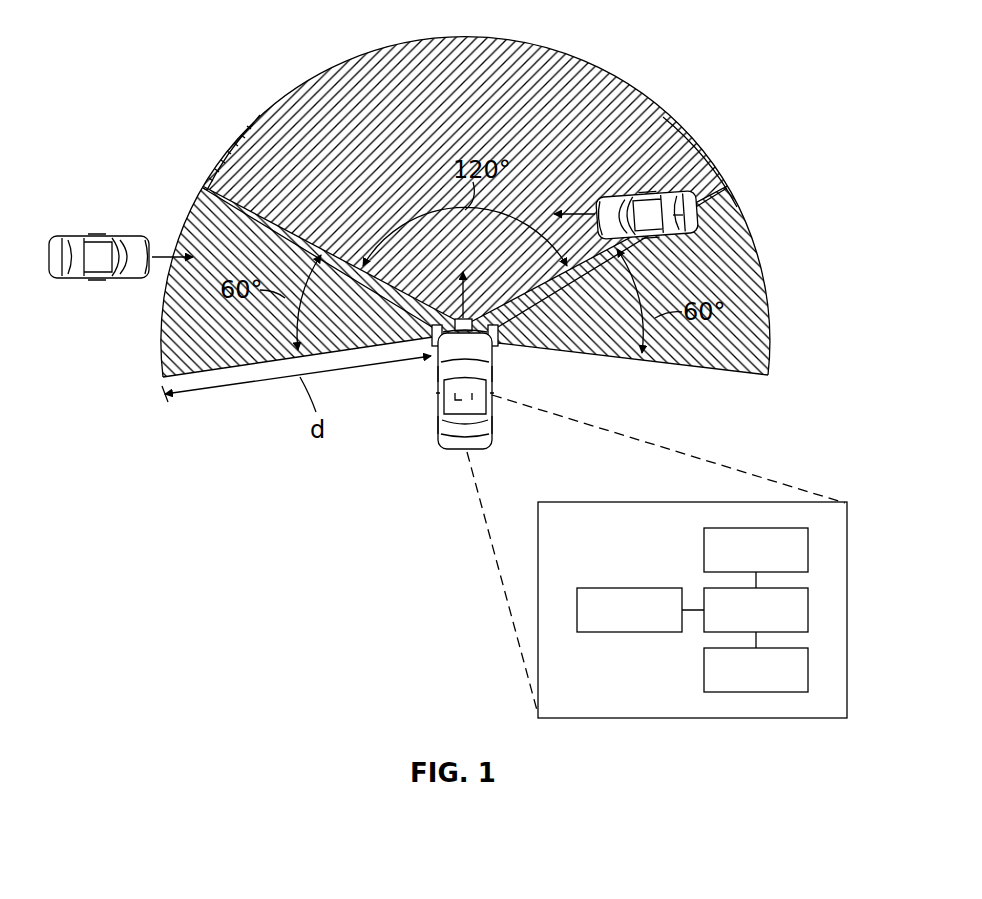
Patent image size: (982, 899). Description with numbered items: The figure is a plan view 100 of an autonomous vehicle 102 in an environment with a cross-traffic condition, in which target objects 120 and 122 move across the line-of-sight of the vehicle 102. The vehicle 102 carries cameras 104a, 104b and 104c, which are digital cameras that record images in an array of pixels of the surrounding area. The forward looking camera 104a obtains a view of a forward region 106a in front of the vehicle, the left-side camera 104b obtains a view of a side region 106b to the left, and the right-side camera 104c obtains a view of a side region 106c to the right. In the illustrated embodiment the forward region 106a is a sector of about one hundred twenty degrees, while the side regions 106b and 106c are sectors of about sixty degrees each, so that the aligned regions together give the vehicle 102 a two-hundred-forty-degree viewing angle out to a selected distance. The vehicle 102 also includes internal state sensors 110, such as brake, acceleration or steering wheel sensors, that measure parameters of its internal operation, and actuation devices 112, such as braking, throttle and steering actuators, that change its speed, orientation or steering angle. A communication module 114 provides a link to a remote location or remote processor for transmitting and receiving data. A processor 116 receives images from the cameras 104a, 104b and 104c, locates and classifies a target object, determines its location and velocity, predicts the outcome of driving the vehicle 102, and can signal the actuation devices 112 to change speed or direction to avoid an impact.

The plan view 100 is at (130, 40).
The autonomous vehicle 102 is at (492, 437).
The forward looking camera 104a is at (458, 318).
The left-side camera 104b is at (432, 333).
The right-side camera 104c is at (498, 333).
The forward region 106a is at (362, 62).
The side region 106b is at (168, 350).
The side region 106c is at (752, 345).
The internal state sensor 110 is at (756, 550).
The actuation device 112 is at (756, 670).
The communication module 114 is at (629, 610).
The processor 116 is at (756, 610).
The target object 120 is at (75, 235).
The target object 122 is at (648, 195).